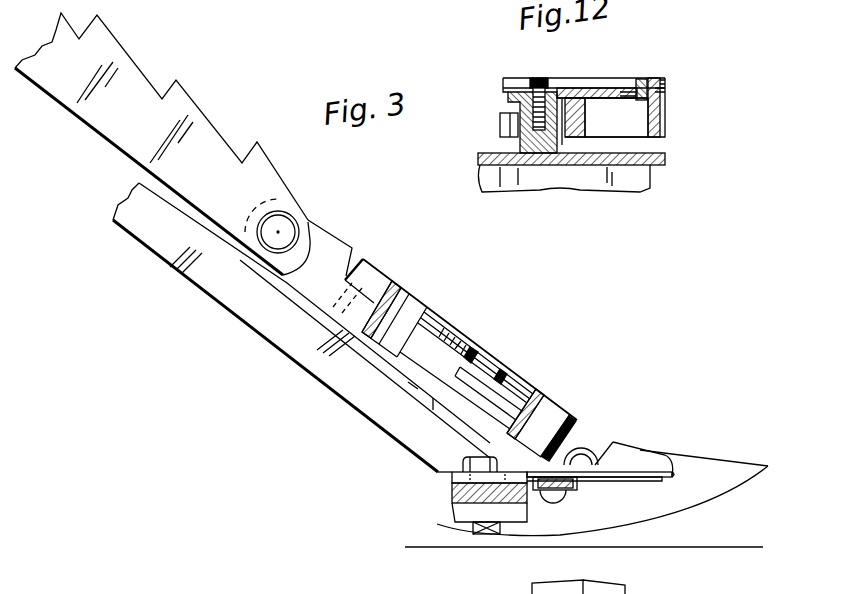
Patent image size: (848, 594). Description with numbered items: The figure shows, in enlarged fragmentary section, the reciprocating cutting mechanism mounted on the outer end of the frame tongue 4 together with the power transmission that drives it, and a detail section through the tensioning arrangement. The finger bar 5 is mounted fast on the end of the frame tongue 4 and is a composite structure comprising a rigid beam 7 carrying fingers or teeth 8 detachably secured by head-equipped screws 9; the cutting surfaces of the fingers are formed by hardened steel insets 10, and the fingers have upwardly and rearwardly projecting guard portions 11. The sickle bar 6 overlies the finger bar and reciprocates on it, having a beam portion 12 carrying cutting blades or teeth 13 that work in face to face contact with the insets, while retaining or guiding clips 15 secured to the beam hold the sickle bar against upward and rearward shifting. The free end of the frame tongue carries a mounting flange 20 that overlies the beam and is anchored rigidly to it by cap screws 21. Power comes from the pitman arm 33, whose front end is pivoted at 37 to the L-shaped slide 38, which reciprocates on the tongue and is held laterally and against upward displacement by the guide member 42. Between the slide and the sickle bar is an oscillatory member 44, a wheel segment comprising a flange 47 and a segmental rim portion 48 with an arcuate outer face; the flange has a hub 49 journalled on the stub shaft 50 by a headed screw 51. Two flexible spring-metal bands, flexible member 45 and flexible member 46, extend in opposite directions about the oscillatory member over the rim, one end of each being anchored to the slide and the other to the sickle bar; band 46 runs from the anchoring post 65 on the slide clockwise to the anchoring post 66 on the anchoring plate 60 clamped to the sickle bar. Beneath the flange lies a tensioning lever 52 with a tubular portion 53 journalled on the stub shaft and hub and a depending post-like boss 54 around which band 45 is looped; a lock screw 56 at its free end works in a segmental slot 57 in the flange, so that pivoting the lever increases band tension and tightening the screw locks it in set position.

In FIG. 3, the frame tongue 4 is at (350, 373).
In FIG. 12, the frame tongue 4 is at (493, 175).
In FIG. 3, the finger bar 5 is at (460, 515).
In FIG. 3, the sickle bar 6 is at (723, 593).
In FIG. 3, the rigid beam 7 is at (452, 498).
In FIG. 3, the fingers or teeth 8 is at (640, 512).
In FIG. 3, the head-equipped screws 9 is at (510, 527).
In FIG. 3, the hardened steel insets 10 is at (607, 485).
In FIG. 3, the guard portions 11 is at (637, 448).
In FIG. 3, the beam portion 12 is at (570, 483).
In FIG. 3, the cutting blades or teeth 13 is at (648, 472).
In FIG. 3, the retaining or guiding clips 15 is at (570, 455).
In FIG. 3, the mounting flange 20 is at (463, 478).
In FIG. 3, the cap screws 21 is at (483, 463).
In FIG. 3, the pitman arm 33 is at (180, 102).
In FIG. 3, the pivot 37 is at (276, 222).
In FIG. 3, the slide 38 is at (328, 248).
In FIG. 3, the guide member 42 is at (312, 308).
In FIG. 3, the oscillatory member 44 is at (542, 400).
In FIG. 12, the oscillatory member 44 is at (630, 120).
In FIG. 3, the flexible member 45 is at (433, 403).
In FIG. 12, the flexible member 45 is at (510, 122).
In FIG. 3, the flexible member 46 is at (372, 283).
In FIG. 12, the flexible member 46 is at (667, 90).
In FIG. 3, the flange 47 is at (422, 318).
In FIG. 12, the flange 47 is at (603, 88).
In FIG. 3, the segmental rim portion 48 is at (397, 292).
In FIG. 12, the segmental rim portion 48 is at (665, 117).
In FIG. 12, the hub 49 is at (520, 100).
In FIG. 3, the stub shaft 50 is at (408, 382).
In FIG. 12, the stub shaft 50 is at (538, 133).
In FIG. 3, the headed screw 51 is at (447, 353).
In FIG. 12, the headed screw 51 is at (538, 82).
In FIG. 3, the tensioning lever 52 is at (495, 387).
In FIG. 12, the tensioning lever 52 is at (620, 93).
In FIG. 3, the tubular portion 53 is at (467, 355).
In FIG. 12, the tubular portion 53 is at (518, 105).
In FIG. 3, the post-like boss 54 is at (488, 368).
In FIG. 12, the post-like boss 54 is at (575, 133).
In FIG. 12, the lock screw 56 is at (650, 77).
In FIG. 12, the segmental slot 57 is at (663, 80).
In FIG. 3, the anchoring plate 60 is at (610, 445).
In FIG. 3, the anchoring post 65 is at (375, 265).
In FIG. 3, the anchoring post 66 is at (590, 420).